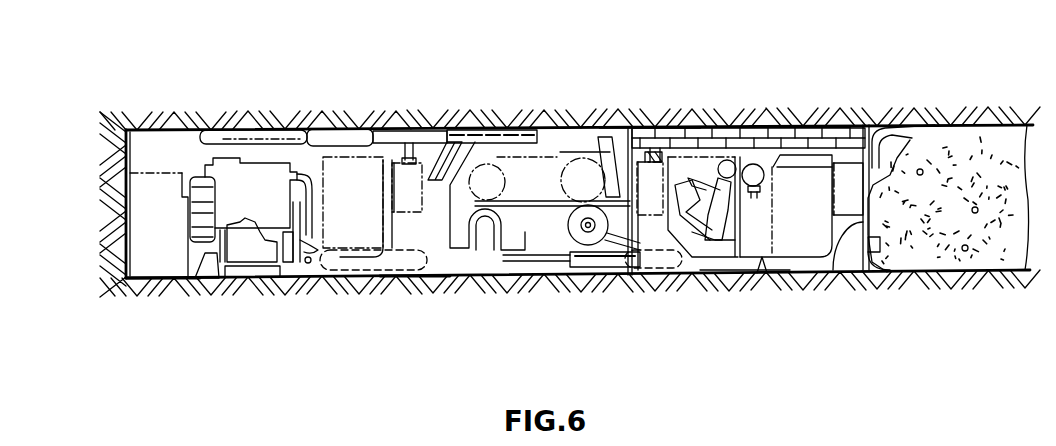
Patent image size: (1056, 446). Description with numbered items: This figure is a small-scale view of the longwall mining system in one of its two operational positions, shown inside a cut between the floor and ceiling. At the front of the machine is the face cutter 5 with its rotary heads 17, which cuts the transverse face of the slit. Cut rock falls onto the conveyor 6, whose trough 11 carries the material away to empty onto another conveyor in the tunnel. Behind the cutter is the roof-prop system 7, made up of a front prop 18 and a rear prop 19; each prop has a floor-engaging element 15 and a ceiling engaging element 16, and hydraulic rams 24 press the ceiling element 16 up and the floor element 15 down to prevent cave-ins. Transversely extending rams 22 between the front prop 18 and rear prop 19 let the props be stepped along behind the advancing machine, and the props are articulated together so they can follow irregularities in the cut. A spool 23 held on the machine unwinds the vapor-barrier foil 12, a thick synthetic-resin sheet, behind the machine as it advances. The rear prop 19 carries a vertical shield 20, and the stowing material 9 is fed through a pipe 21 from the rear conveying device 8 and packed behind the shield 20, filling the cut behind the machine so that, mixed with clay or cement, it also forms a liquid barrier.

The face cutter 5 is at (135, 283).
The conveyor 6 is at (233, 282).
The roof-prop system 7 is at (412, 298).
The device for conveying stowing material 8 is at (750, 214).
The stowing material 9 is at (993, 125).
The trough 11 is at (265, 270).
The vapor-barrier foil 12 is at (557, 200).
The floor-engaging element 15 is at (346, 283).
The ceiling engaging element 16 is at (547, 128).
The rotary heads 17 is at (140, 243).
The front prop 18 is at (644, 98).
The rear prop 19 is at (789, 108).
The vertical shield 20 is at (838, 260).
The pipe 21 is at (913, 124).
The transversely extending rams 22 is at (489, 127).
The spool 23 is at (503, 232).
The hydraulic rams 24 is at (409, 128).